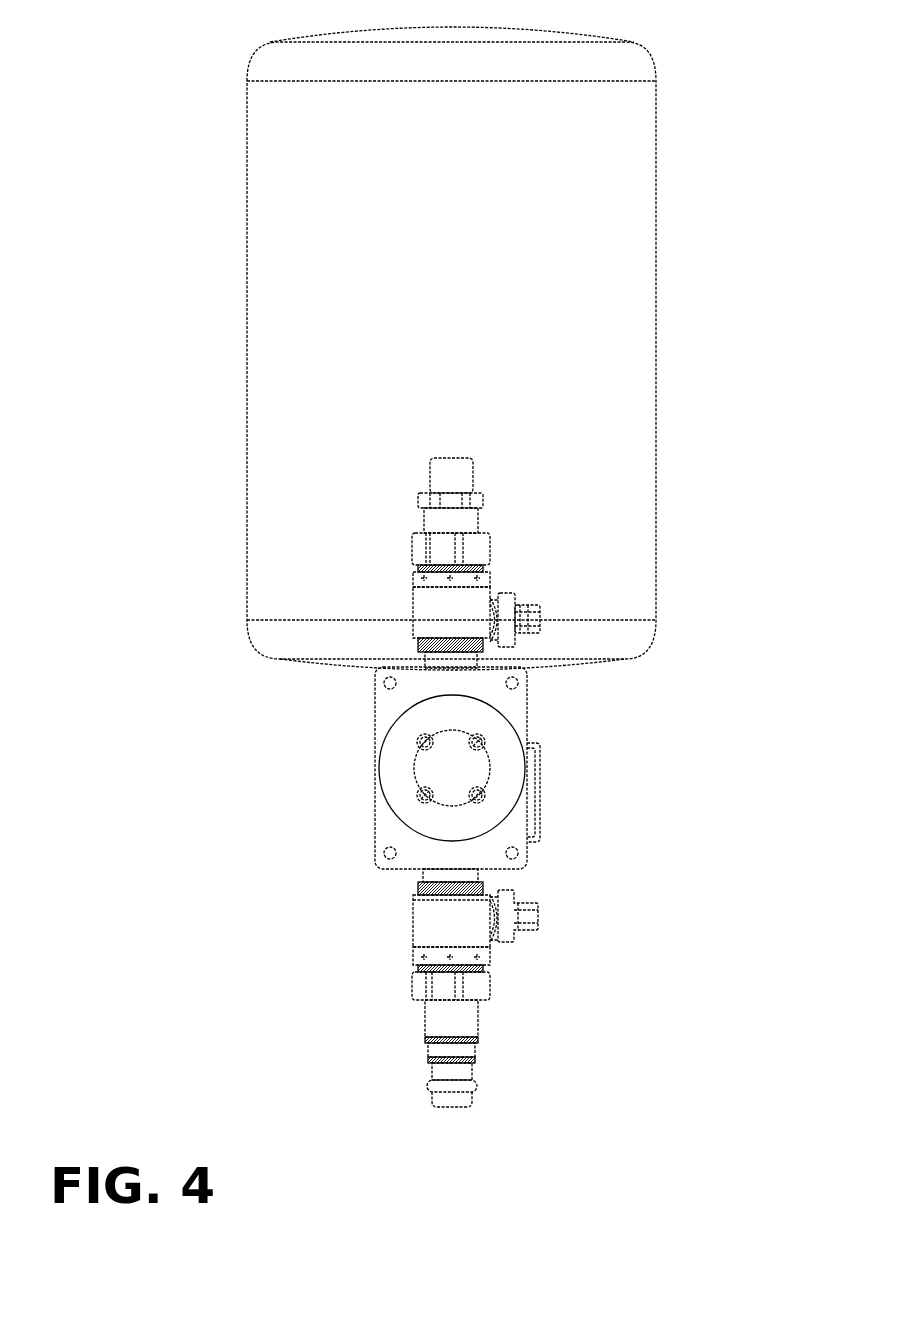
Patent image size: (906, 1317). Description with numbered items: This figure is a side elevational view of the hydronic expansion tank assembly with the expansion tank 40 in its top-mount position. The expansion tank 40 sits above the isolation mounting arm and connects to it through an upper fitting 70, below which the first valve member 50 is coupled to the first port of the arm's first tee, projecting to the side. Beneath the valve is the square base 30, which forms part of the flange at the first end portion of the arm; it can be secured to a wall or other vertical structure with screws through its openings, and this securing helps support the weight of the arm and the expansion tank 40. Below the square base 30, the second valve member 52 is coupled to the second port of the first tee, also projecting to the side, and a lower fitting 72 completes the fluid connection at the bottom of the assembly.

The expansion tank 40 is at (595, 297).
The upper union nut fitting 70 is at (472, 546).
The first valve member 50 is at (493, 617).
The square base 30 is at (510, 705).
The second valve member 52 is at (473, 923).
The lower union nut fitting 72 is at (473, 982).